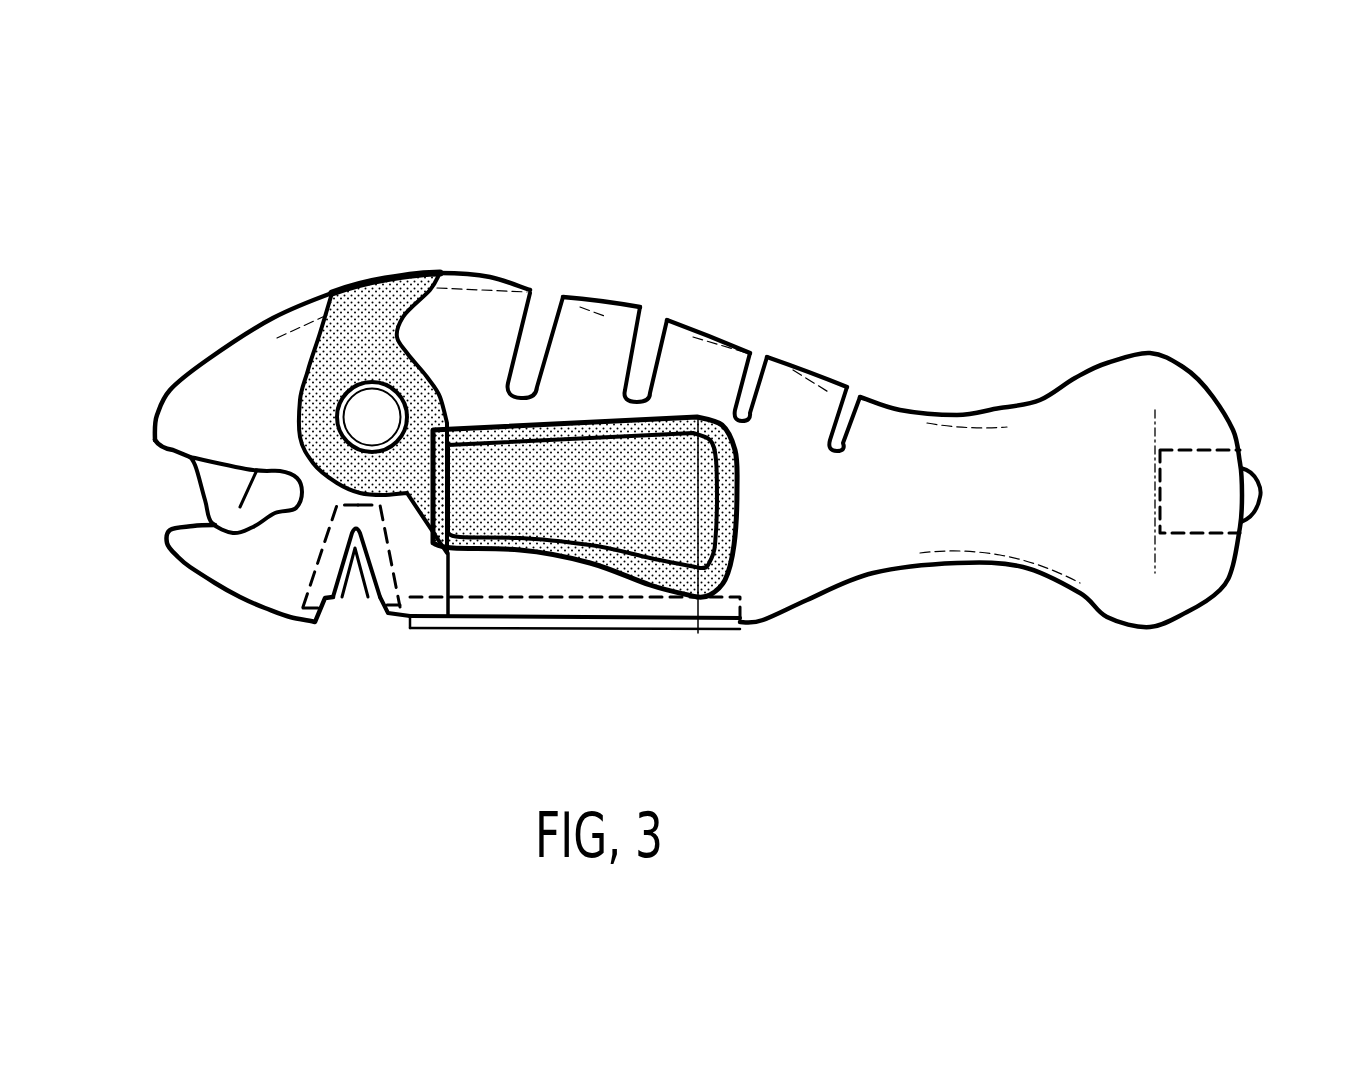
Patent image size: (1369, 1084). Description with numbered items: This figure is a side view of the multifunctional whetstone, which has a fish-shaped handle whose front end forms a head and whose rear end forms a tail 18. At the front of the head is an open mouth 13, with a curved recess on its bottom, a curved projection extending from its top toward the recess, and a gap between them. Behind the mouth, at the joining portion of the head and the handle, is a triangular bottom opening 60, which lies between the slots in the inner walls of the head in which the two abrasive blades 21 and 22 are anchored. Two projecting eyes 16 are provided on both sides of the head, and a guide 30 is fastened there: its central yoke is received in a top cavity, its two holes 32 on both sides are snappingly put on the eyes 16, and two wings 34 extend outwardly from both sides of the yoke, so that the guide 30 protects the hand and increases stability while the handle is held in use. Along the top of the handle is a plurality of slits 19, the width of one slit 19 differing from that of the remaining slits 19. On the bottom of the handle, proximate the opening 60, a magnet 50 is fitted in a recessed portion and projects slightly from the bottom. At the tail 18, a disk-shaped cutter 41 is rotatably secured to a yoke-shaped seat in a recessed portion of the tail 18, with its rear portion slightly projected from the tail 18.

The open mouth 13 is at (170, 500).
The projecting eyes 16 is at (362, 420).
The tail 18 is at (1187, 587).
The slits 19 is at (752, 375).
The abrasive blade 21 is at (373, 597).
The abrasive blade 22 is at (333, 597).
The guide 30 is at (383, 277).
The holes 32 is at (413, 378).
The wings 34 is at (573, 460).
The disk-shaped cutter 41 is at (1260, 487).
The magnet 50 is at (590, 632).
The triangular bottom opening 60 is at (355, 593).